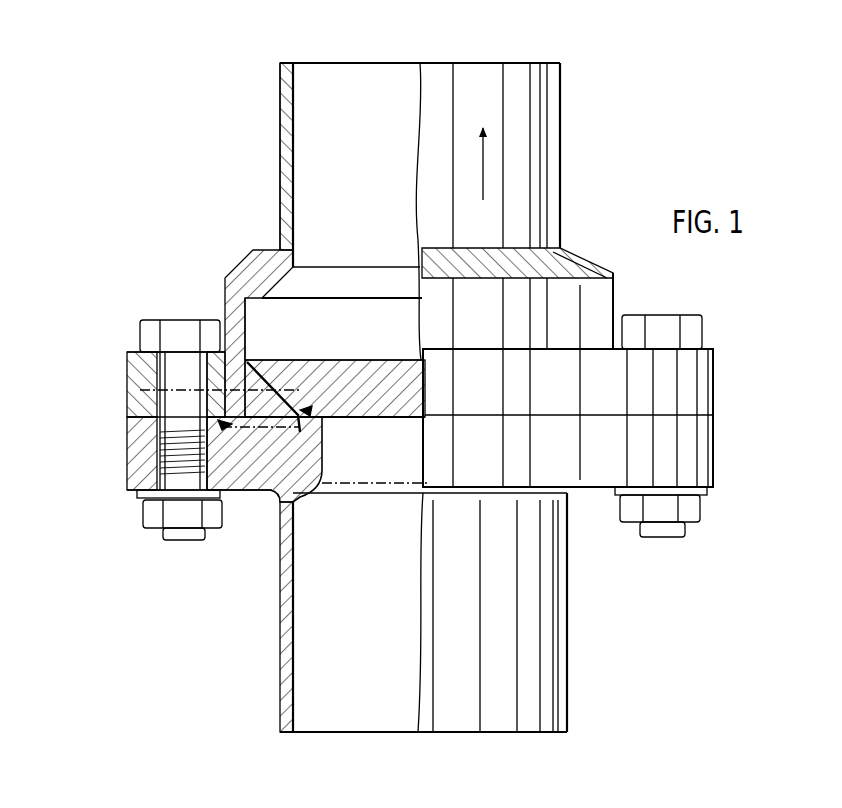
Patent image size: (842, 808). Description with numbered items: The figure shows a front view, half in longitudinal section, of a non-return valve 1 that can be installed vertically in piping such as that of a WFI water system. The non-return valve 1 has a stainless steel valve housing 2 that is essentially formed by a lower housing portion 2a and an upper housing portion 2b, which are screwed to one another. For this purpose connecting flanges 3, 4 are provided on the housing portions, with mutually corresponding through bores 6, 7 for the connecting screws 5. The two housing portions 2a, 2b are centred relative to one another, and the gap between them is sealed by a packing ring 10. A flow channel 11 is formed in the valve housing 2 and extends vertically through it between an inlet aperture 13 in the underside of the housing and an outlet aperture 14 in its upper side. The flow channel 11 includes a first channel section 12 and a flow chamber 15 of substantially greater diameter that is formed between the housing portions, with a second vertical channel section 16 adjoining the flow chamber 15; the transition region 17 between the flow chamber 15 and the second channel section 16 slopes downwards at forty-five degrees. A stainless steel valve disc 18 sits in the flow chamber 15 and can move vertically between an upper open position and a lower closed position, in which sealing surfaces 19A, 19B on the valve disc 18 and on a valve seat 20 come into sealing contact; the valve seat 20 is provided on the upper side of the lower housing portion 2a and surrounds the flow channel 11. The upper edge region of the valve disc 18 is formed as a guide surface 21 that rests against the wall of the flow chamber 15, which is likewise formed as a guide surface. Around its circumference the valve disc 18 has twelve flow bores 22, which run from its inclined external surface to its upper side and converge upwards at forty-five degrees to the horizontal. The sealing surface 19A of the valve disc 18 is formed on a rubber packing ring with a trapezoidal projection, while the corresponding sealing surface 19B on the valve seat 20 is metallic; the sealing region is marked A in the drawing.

The non-return valve 1 is at (185, 177).
The valve housing 2 is at (547, 113).
The lower housing portion 2a is at (573, 653).
The upper housing portion 2b is at (567, 188).
The connecting flange 3 is at (140, 445).
The connecting flange 4 is at (138, 372).
The connecting screw 5 is at (165, 540).
The through bore 6 is at (140, 478).
The through bore 7 is at (177, 345).
The packing ring 10 is at (240, 420).
The flow channel 11 is at (385, 135).
The first channel section 12 is at (373, 662).
The inlet aperture 13 is at (472, 733).
The outlet aperture 14 is at (483, 63).
The flow chamber 15 is at (378, 268).
The second vertical channel section 16 is at (300, 152).
The transition region 17 is at (315, 268).
The valve disc 18 is at (425, 388).
The sealing surface 19A is at (303, 438).
The sealing surface 19B is at (315, 451).
The valve seat 20 is at (310, 490).
The guide surface 21 is at (238, 357).
The flow bore 22 is at (303, 370).
The sealing region A is at (140, 398).